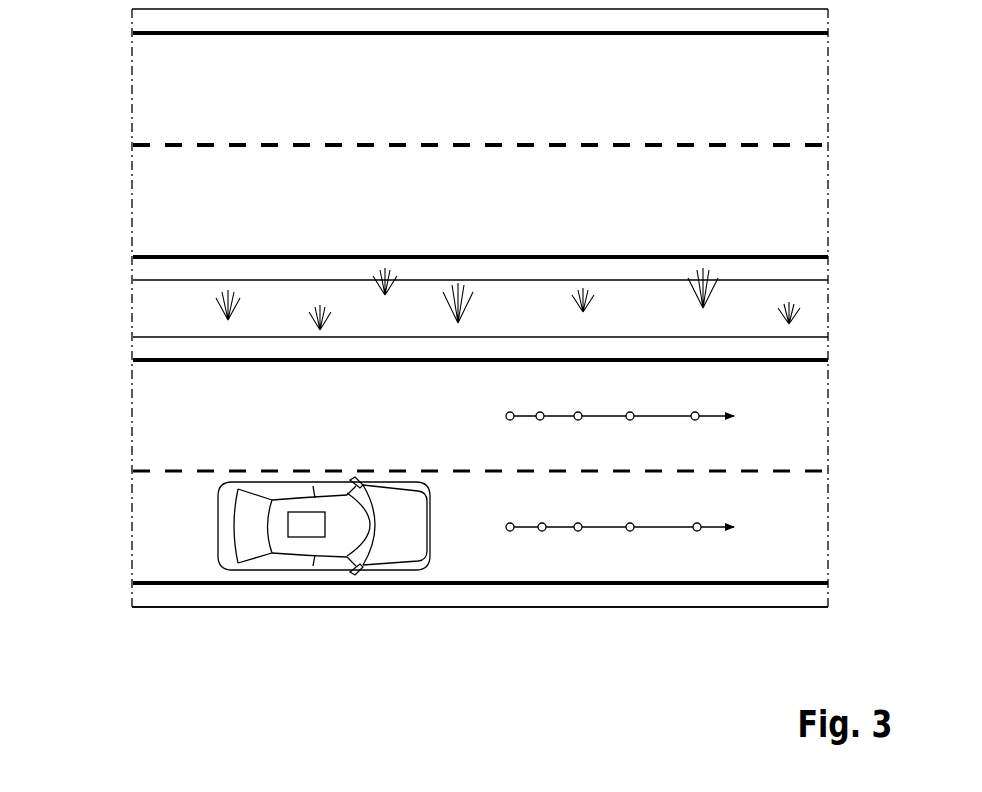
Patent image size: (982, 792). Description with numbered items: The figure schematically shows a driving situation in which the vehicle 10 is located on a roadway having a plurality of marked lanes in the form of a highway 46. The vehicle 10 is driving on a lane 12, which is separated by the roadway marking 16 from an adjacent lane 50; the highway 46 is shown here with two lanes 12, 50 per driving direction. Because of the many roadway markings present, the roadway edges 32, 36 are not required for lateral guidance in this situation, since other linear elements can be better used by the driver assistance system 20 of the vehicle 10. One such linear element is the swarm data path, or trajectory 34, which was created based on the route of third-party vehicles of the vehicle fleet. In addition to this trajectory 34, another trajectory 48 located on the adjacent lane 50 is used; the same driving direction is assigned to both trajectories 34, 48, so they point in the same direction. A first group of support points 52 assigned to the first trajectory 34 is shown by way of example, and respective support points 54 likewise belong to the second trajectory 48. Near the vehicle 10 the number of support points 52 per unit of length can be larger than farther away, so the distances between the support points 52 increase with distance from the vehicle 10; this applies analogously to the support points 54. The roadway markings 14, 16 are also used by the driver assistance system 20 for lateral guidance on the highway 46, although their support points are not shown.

The vehicle 10 is at (388, 578).
The lane 12 is at (153, 537).
The roadway marking 14 is at (172, 587).
The roadway marking 16 is at (172, 471).
The driver assistance system 20 is at (303, 528).
The roadway edge 32 is at (730, 608).
The trajectory 34 is at (678, 527).
The roadway edge 36 is at (172, 337).
The highway 46 is at (88, 80).
The trajectory 48 is at (674, 416).
The lane 50 is at (234, 428).
The support points 52 is at (510, 531).
The support points 54 is at (510, 412).